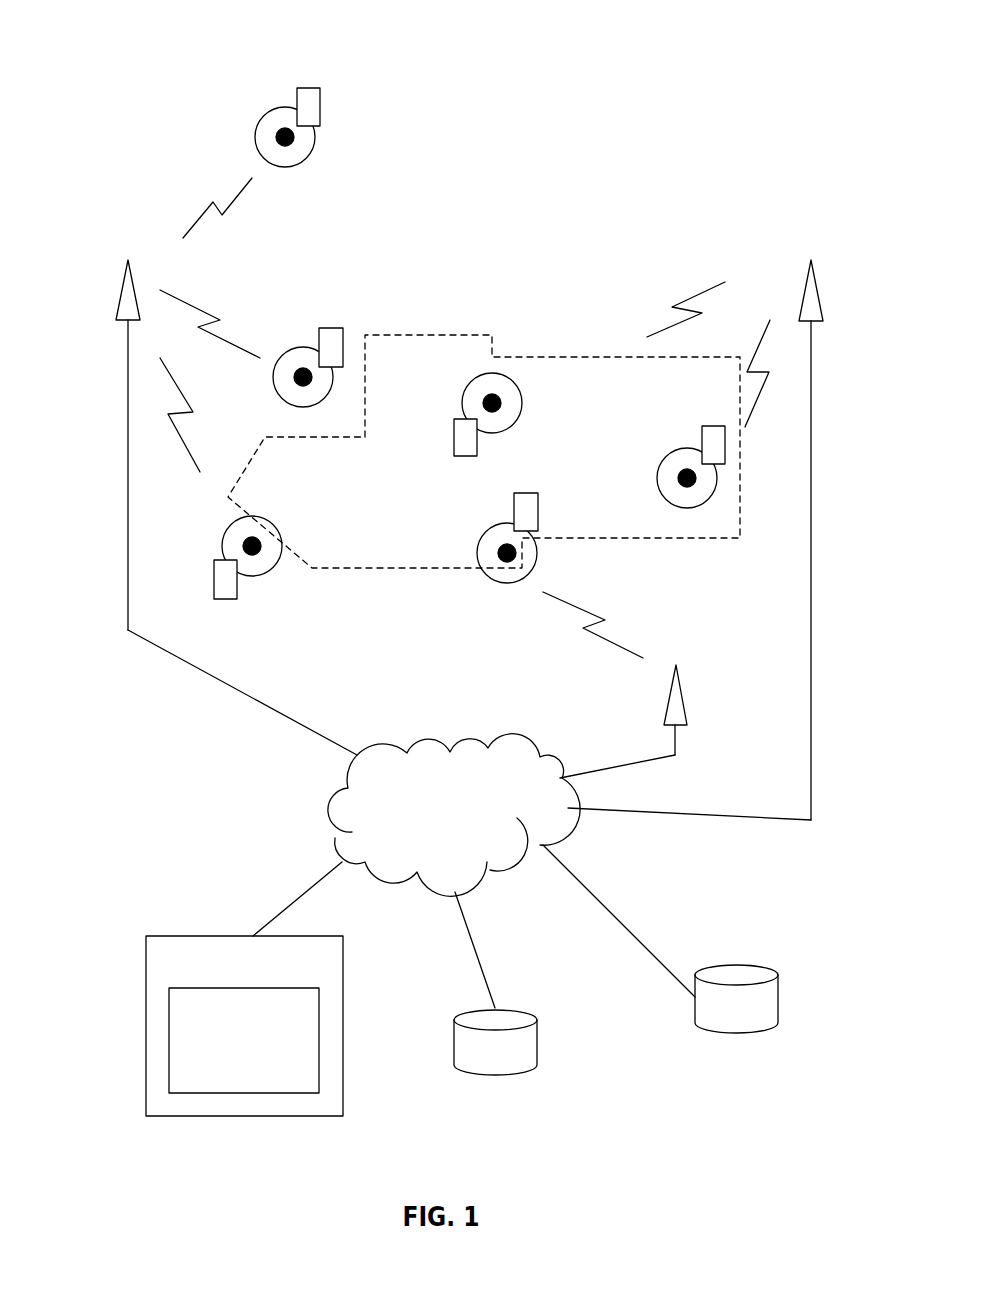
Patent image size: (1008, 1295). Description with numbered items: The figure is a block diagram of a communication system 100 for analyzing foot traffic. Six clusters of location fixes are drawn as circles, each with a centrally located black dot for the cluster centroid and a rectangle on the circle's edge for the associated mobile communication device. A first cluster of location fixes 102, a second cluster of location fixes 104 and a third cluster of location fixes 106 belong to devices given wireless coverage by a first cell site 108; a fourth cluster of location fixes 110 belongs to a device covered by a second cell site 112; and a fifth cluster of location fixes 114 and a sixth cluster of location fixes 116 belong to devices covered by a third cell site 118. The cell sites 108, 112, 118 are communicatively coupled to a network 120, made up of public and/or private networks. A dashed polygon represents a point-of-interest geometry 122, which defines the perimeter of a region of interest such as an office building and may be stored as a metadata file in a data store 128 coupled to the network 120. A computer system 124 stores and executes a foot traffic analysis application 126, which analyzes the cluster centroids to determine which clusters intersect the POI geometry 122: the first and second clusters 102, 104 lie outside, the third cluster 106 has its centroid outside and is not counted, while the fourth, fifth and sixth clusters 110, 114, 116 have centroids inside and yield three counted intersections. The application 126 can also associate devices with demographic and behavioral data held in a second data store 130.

The communication system 100 is at (521, 92).
The first cluster of location fixes 102 is at (279, 108).
The second cluster of location fixes 104 is at (300, 348).
The third cluster of location fixes 106 is at (252, 576).
The first cell site 108 is at (128, 258).
The fourth cluster of location fixes 110 is at (506, 583).
The second cell site 112 is at (677, 665).
The fifth cluster of location fixes 114 is at (522, 403).
The sixth cluster of location fixes 116 is at (657, 478).
The third cell site 118 is at (812, 258).
The network 120 is at (327, 808).
The point-of-interest geometry 122 is at (425, 330).
The computer system 124 is at (172, 940).
The foot traffic analysis application 126 is at (169, 1025).
The data store 128 is at (530, 1017).
The second data store 130 is at (768, 970).